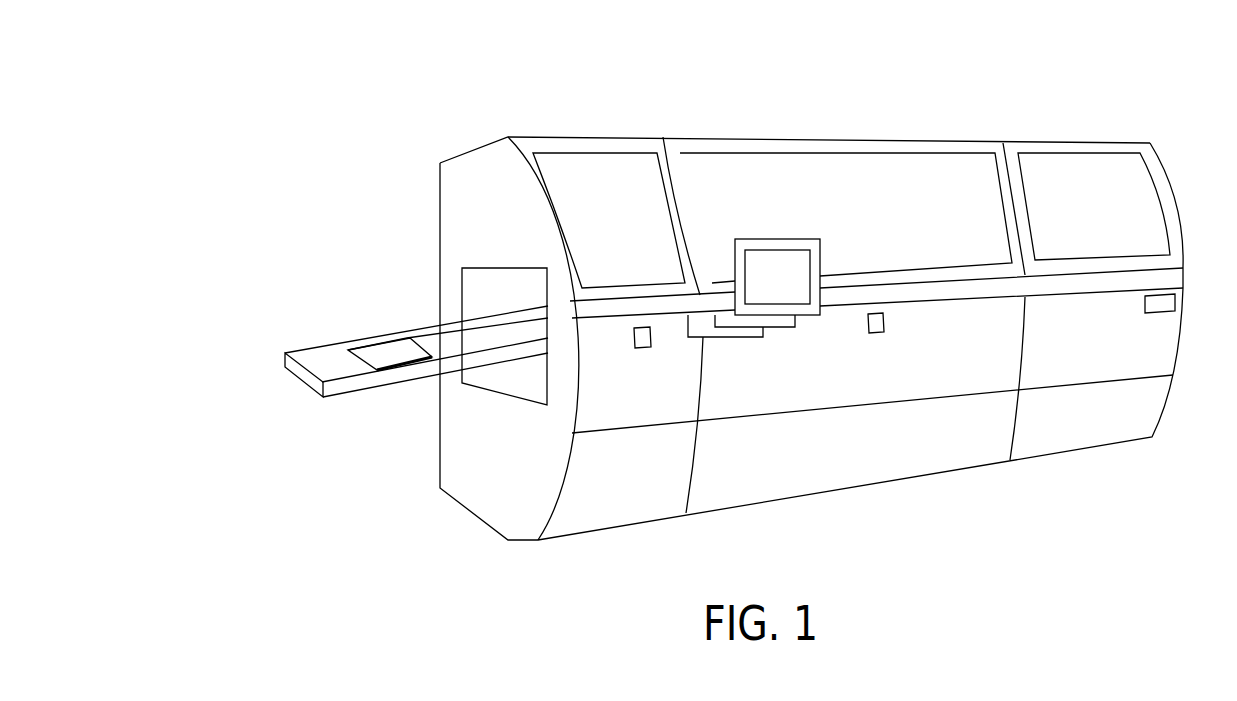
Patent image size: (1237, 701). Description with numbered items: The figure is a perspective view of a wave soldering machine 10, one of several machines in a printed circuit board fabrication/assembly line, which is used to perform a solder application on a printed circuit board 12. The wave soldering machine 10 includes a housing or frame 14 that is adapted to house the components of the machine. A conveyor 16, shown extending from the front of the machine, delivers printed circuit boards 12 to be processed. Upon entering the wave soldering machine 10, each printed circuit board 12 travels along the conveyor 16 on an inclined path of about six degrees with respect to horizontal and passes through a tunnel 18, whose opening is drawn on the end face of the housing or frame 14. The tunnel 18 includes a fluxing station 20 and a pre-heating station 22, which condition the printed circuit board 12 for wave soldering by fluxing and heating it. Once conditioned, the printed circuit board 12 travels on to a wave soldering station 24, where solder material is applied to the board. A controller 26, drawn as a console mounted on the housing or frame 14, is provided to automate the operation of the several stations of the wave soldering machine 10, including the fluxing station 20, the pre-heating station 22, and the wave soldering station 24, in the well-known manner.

The wave soldering machine 10 is at (1040, 74).
The printed circuit board 12 is at (384, 353).
The housing or frame 14 is at (1184, 340).
The conveyor 16 is at (294, 377).
The tunnel 18 is at (496, 284).
The fluxing station 20 is at (602, 178).
The pre-heating station 22 is at (748, 165).
The wave soldering station 24 is at (1135, 177).
The controller 26 is at (821, 258).